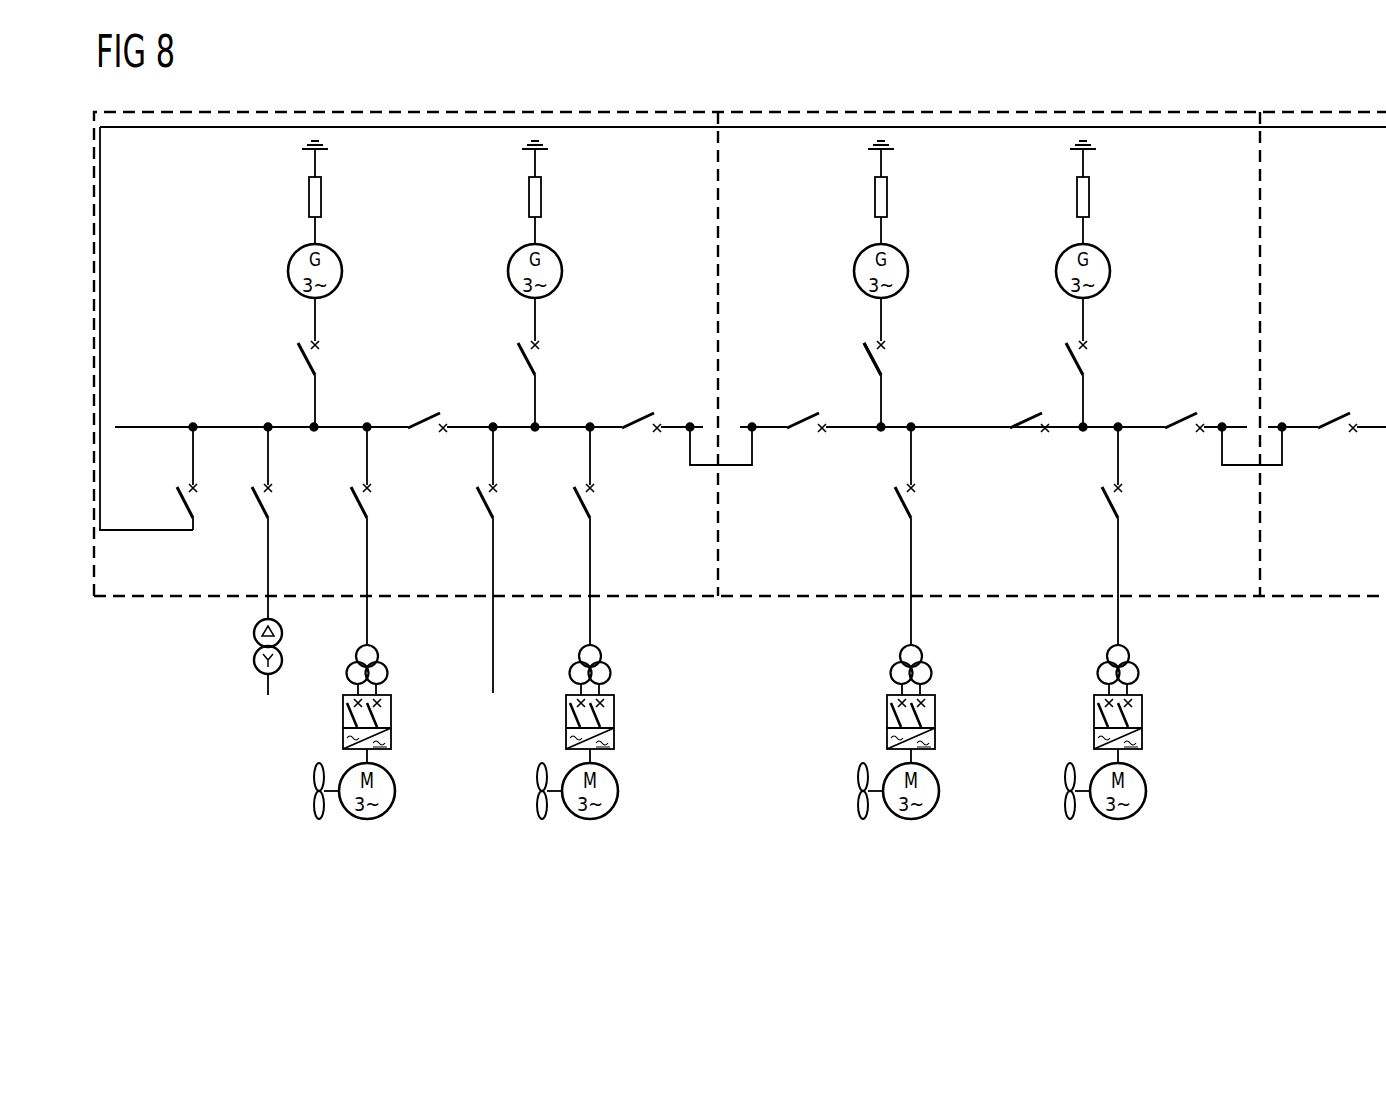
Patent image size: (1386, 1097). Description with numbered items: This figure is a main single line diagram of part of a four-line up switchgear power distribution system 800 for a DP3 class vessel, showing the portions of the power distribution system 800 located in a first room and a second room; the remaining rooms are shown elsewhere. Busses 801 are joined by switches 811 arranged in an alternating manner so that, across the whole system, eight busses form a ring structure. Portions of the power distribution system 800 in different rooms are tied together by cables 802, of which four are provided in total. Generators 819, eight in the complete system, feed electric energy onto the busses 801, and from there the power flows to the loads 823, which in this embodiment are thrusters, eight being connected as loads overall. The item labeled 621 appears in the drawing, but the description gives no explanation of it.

The power distribution system 800 is at (1282, 754).
The bus 801 is at (337, 427).
The cable 802 is at (639, 127).
The switch 811 is at (648, 372).
The generator 819 is at (297, 248).
The generator circuit breaker 621 is at (872, 366).
The load 823 is at (395, 791).